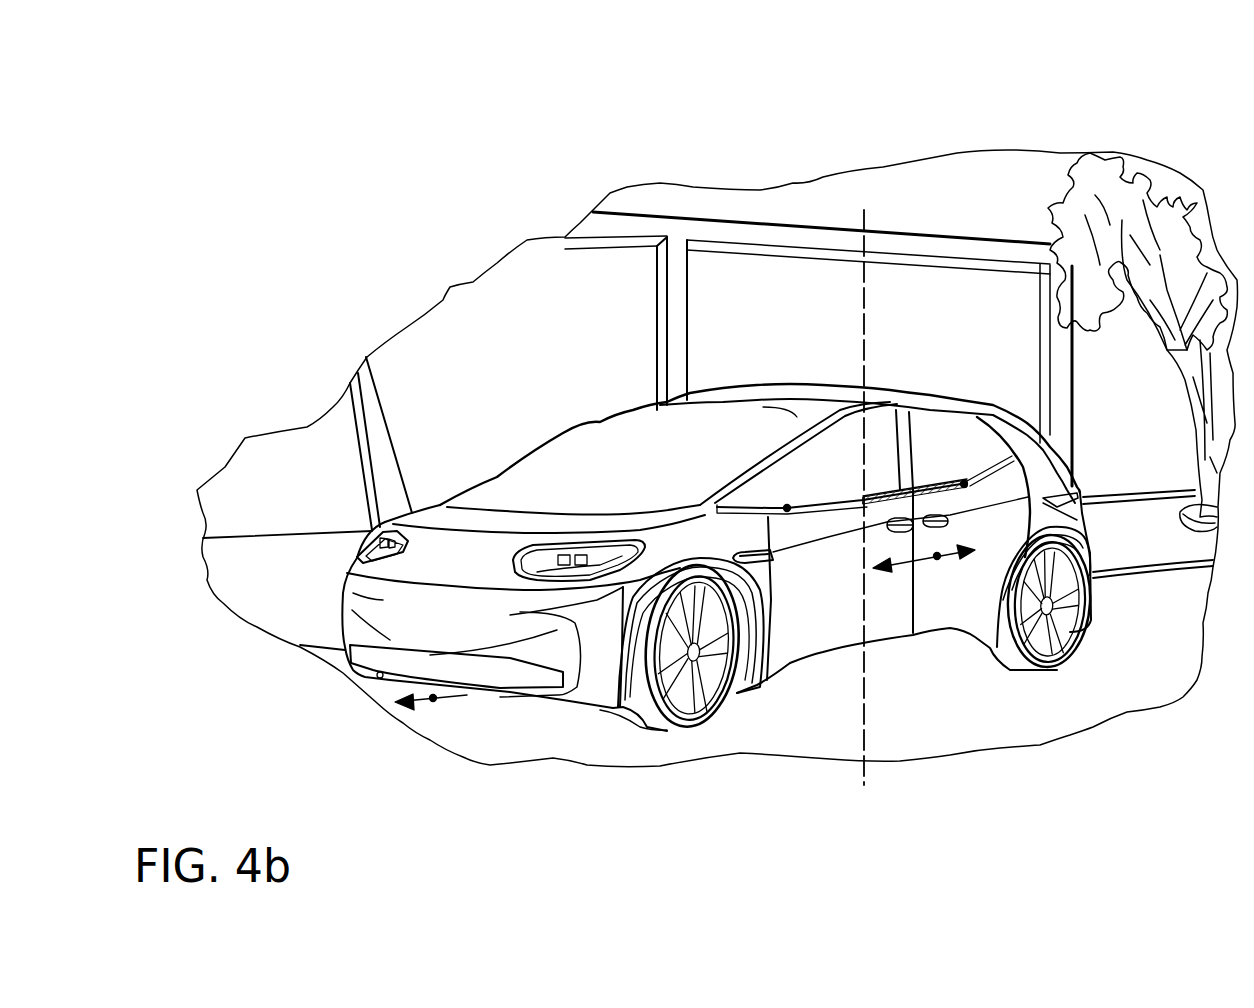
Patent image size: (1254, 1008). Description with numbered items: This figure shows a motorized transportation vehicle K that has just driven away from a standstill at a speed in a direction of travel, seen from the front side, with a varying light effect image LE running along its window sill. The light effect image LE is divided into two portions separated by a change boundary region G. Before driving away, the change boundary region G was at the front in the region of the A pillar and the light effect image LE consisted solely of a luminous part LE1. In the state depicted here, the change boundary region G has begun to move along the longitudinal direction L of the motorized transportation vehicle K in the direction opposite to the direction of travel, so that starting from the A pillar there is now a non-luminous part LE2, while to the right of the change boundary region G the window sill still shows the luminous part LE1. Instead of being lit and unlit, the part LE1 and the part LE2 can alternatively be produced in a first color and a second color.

The motorized transportation vehicle K is at (838, 293).
The change boundary region G is at (864, 500).
The light effect image LE is at (884, 440).
The luminous part LE1 is at (964, 484).
The non-luminous part LE2 is at (787, 508).
The longitudinal direction L is at (936, 556).